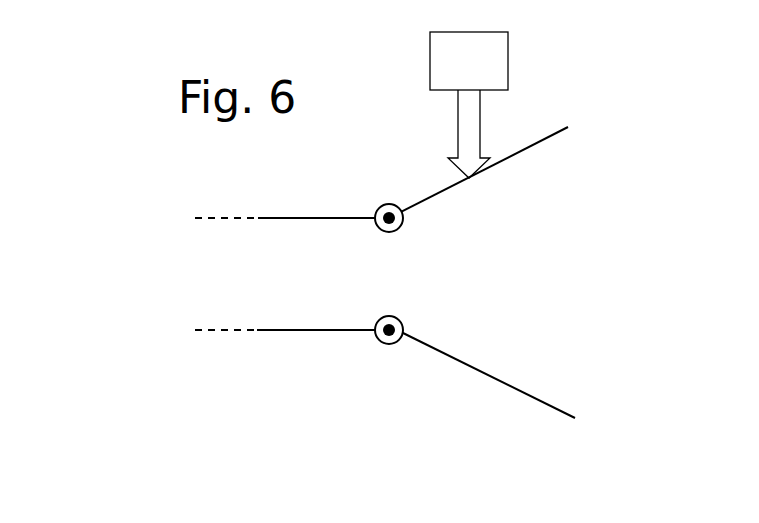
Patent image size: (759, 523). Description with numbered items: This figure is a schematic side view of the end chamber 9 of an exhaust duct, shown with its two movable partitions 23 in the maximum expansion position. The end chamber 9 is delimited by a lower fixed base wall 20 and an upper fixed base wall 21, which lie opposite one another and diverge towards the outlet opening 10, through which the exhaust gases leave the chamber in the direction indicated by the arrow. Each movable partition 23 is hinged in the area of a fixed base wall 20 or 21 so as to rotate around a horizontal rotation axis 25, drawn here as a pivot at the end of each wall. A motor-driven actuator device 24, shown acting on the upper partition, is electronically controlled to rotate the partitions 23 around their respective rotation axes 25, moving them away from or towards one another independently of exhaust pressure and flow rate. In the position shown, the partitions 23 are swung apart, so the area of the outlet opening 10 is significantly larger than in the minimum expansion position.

The end chamber 9 is at (620, 403).
The outlet opening 10 is at (577, 272).
The lower fixed base wall 20 is at (312, 333).
The upper fixed base wall 21 is at (327, 215).
The movable partition 23 is at (542, 140).
The motor-driven actuator device 24 is at (469, 105).
The rotation axis 25 is at (388, 204).